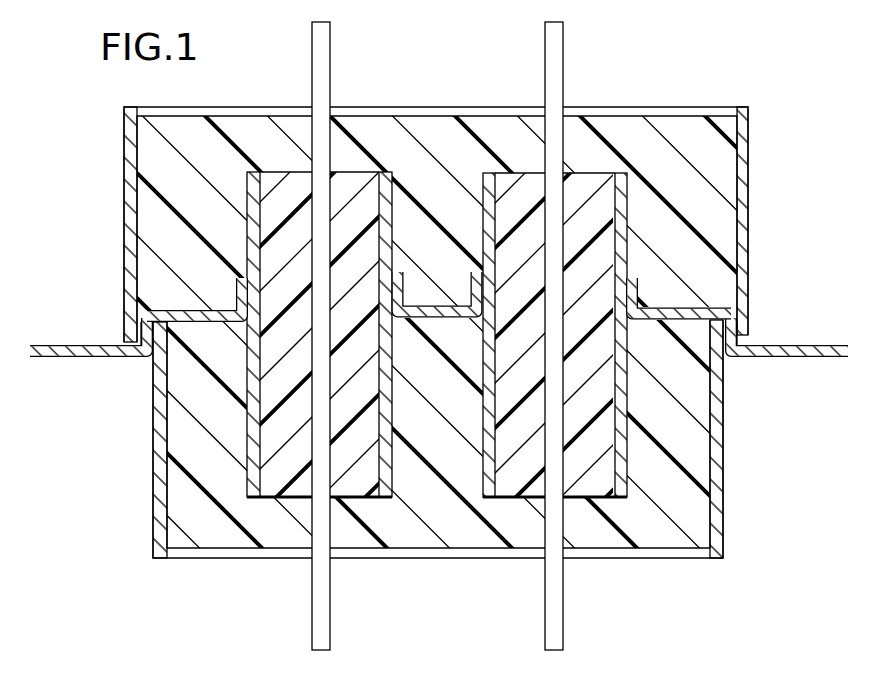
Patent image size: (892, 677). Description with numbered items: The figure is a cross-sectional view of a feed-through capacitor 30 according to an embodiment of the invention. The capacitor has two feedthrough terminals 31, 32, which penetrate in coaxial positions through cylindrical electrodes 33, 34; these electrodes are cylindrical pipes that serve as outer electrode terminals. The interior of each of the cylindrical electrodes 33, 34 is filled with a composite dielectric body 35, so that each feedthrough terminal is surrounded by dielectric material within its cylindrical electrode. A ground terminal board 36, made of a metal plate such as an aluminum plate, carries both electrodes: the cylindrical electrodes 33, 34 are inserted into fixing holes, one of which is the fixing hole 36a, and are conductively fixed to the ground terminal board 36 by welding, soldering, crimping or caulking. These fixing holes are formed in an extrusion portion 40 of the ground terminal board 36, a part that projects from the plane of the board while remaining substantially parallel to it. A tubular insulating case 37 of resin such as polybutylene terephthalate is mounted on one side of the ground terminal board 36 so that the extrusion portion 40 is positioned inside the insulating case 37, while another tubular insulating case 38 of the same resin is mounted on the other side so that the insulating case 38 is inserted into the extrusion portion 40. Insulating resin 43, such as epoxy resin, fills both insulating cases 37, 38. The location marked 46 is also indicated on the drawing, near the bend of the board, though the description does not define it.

The feed-through capacitor 30 is at (122, 544).
The feedthrough terminal 31 is at (318, 636).
The feedthrough terminal 32 is at (555, 632).
The cylindrical electrode 33 is at (248, 188).
The cylindrical electrode 34 is at (628, 197).
The composite dielectric body 35 is at (273, 490).
The ground terminal board 36 is at (57, 358).
The fixing hole 36a is at (258, 292).
The insulating case 37 is at (747, 182).
The insulating case 38 is at (725, 527).
The extrusion portion 40 is at (148, 318).
The insulating resin 43 is at (150, 158).
The bend portion 46 is at (748, 306).